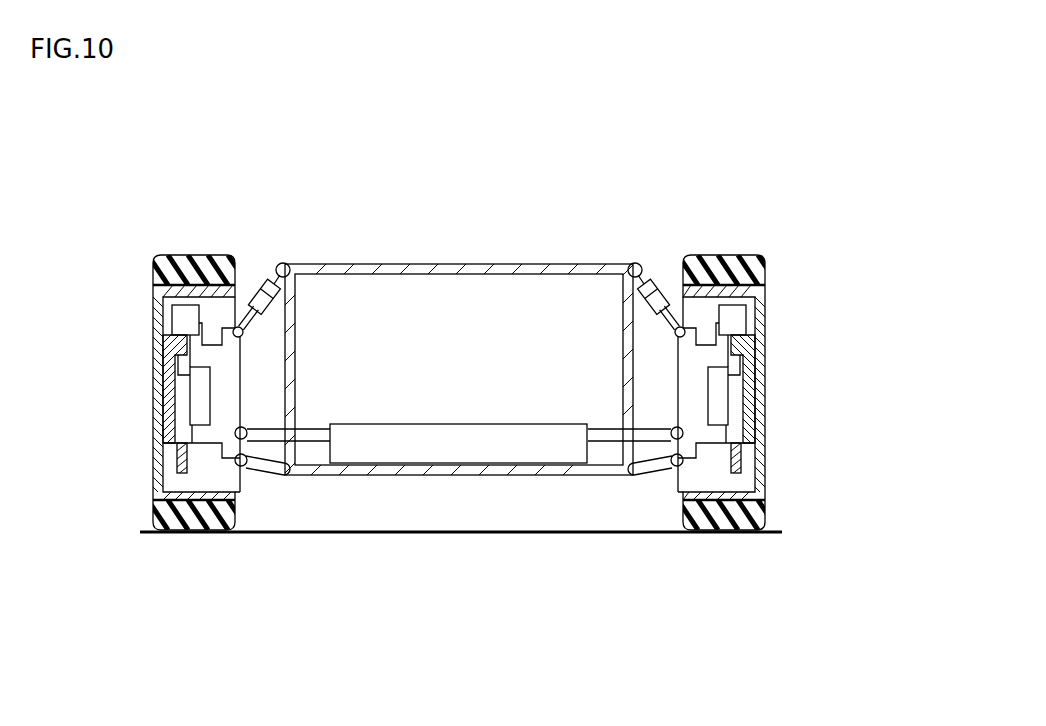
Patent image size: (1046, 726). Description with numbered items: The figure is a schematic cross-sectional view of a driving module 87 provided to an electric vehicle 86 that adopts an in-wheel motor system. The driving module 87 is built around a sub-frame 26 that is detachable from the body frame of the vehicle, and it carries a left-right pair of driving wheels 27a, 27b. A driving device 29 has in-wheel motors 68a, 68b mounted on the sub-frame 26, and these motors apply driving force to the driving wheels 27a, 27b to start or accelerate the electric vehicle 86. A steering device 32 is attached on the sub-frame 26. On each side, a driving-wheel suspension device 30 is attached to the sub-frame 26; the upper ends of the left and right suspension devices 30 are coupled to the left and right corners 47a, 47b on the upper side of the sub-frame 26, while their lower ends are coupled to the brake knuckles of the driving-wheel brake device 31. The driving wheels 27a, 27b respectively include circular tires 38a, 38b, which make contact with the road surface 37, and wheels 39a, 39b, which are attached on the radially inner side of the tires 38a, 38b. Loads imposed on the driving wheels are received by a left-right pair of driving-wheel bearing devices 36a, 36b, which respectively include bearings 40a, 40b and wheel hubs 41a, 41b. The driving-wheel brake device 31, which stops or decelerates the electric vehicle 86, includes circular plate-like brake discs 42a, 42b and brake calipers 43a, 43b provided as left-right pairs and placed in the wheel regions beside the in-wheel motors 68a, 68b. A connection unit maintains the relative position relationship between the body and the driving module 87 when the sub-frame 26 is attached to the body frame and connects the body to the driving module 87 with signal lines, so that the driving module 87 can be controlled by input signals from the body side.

The electric vehicle 86 is at (676, 126).
The driving module 87 is at (590, 193).
The sub-frame 26 is at (677, 263).
The driving wheel 27a is at (80, 442).
The driving wheel 27b is at (838, 442).
The driving device 29 is at (652, 610).
The driving-wheel suspension device 30 is at (268, 282).
The driving-wheel brake device 31 is at (80, 308).
The steering device 32 is at (458, 450).
The driving-wheel bearing device 36a is at (240, 577).
The driving-wheel bearing device 36b is at (588, 577).
The road surface 37 is at (775, 531).
The tire 38a is at (155, 508).
The tire 38b is at (765, 508).
The wheel 39a is at (158, 458).
The wheel 39b is at (760, 455).
The bearing 40a is at (192, 407).
The bearing 40b is at (726, 407).
The wheel hub 41a is at (244, 466).
The wheel hub 41b is at (674, 466).
The brake disc 42a is at (168, 381).
The brake disc 42b is at (750, 381).
The brake caliper 43a is at (180, 320).
The brake caliper 43b is at (738, 320).
The corner 47a is at (300, 262).
The corner 47b is at (616, 263).
The in-wheel motor 68a is at (212, 394).
The in-wheel motor 68b is at (706, 394).